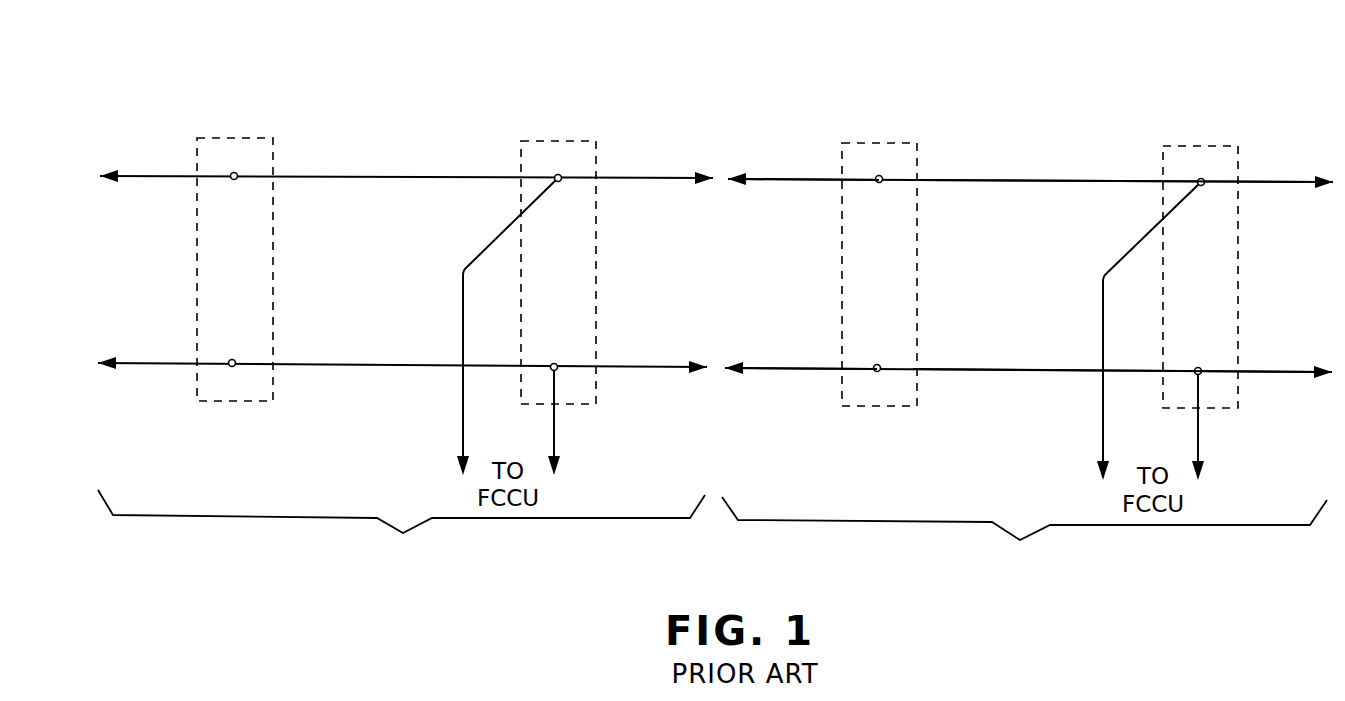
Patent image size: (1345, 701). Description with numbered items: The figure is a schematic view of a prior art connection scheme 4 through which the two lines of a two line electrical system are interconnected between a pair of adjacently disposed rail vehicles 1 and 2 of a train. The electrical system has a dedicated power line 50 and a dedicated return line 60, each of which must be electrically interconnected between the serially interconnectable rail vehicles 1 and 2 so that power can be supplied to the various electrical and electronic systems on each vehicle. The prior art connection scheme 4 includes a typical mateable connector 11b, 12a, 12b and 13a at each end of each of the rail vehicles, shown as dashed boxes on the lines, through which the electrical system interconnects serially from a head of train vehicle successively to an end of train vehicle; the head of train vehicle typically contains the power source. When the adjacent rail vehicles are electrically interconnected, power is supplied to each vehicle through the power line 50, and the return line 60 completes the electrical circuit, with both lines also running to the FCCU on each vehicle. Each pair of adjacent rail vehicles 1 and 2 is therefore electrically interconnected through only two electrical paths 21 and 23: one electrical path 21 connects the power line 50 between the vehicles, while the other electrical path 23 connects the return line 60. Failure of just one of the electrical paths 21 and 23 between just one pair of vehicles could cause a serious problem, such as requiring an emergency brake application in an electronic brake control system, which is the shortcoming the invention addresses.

The rail vehicle 1 is at (1024, 539).
The rail vehicle 2 is at (401, 534).
The prior art connection scheme 4 is at (659, 92).
The mateable connector 11b is at (1210, 146).
The mateable connector 12a is at (892, 143).
The mateable connector 12b is at (568, 141).
The mateable connector 13a is at (245, 138).
The electrical path 21 is at (788, 178).
The electrical path 23 is at (779, 370).
The power line 50 is at (1038, 180).
The return line 60 is at (1024, 372).